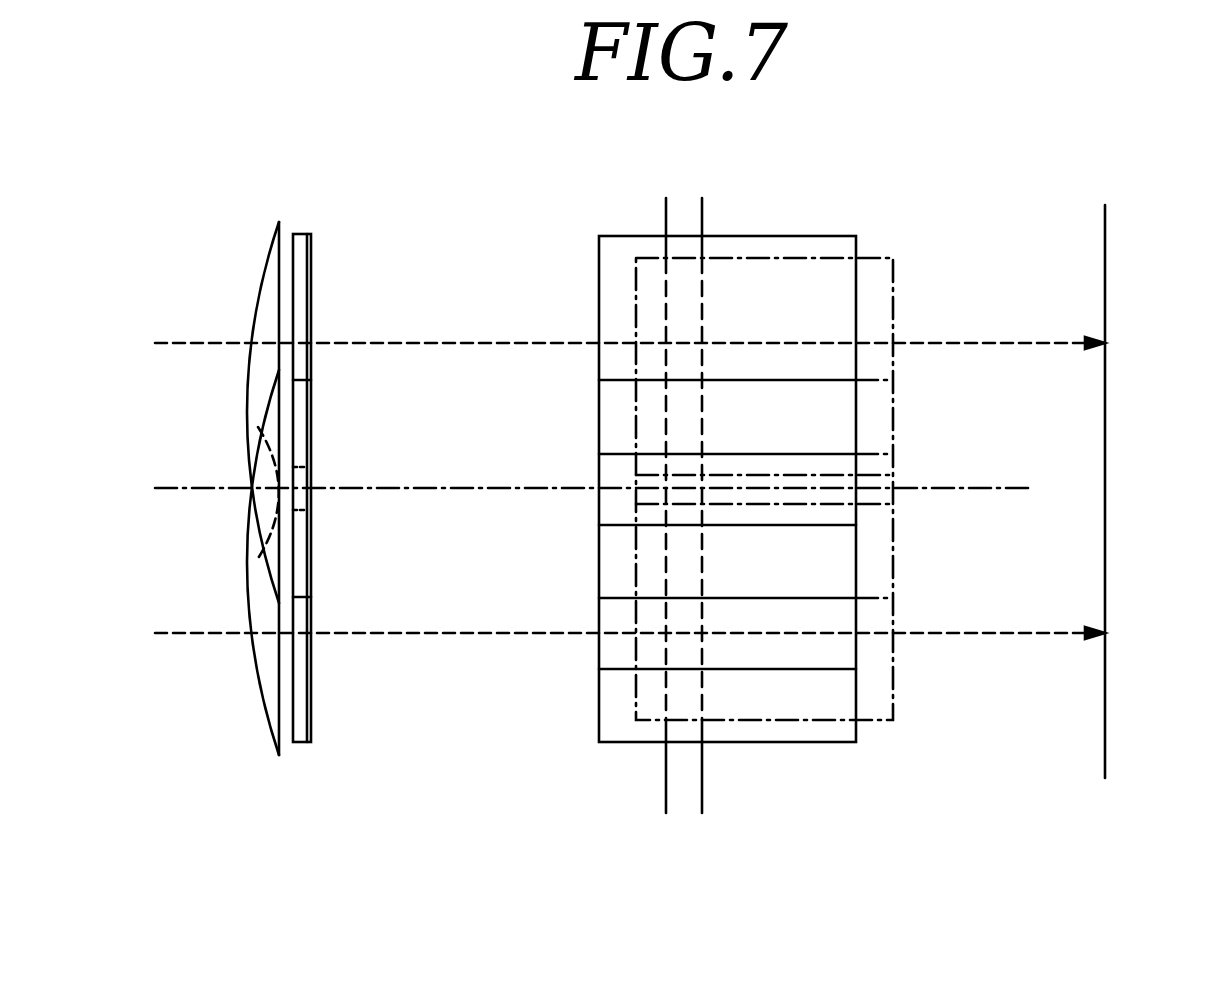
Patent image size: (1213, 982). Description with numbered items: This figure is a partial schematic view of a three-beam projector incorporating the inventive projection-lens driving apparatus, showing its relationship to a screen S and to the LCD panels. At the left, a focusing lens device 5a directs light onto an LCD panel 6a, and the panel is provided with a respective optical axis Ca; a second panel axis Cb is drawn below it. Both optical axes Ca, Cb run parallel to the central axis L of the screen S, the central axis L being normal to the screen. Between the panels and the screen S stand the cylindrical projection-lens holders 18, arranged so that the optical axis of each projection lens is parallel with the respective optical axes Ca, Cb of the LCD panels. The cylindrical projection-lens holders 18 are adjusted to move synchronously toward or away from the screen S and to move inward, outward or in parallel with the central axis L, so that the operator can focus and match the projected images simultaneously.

The focusing lens device 5a is at (263, 477).
The LCD panel 6a is at (300, 411).
The cylindrical projection-lens holder 18 is at (620, 265).
The optical axis Ca is at (664, 339).
The optical axis Cb is at (664, 634).
The central axis L is at (607, 489).
The screen S is at (1106, 752).